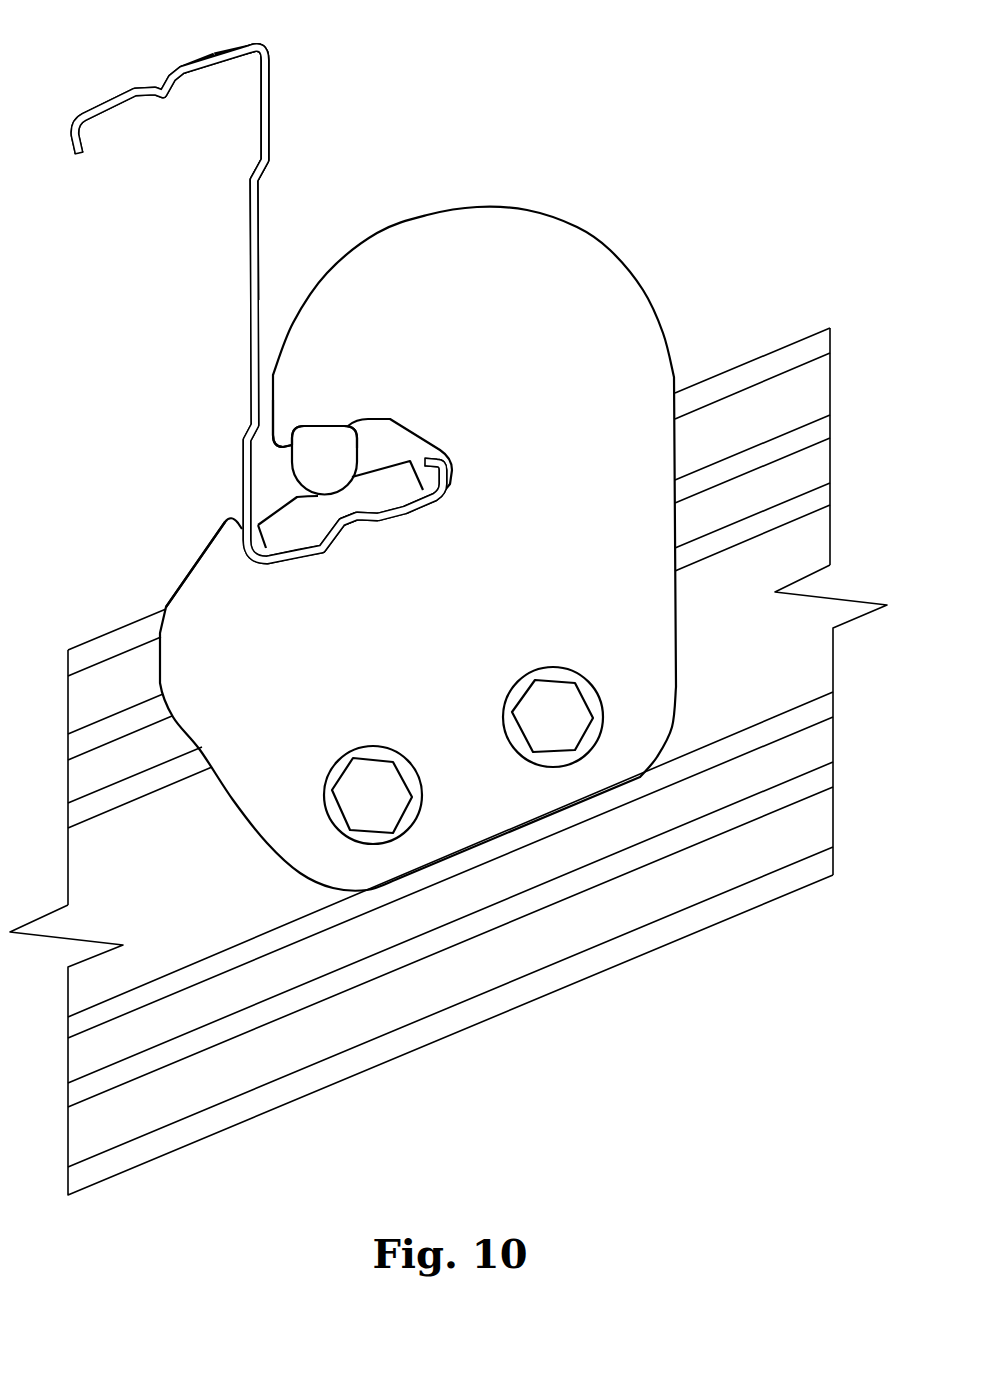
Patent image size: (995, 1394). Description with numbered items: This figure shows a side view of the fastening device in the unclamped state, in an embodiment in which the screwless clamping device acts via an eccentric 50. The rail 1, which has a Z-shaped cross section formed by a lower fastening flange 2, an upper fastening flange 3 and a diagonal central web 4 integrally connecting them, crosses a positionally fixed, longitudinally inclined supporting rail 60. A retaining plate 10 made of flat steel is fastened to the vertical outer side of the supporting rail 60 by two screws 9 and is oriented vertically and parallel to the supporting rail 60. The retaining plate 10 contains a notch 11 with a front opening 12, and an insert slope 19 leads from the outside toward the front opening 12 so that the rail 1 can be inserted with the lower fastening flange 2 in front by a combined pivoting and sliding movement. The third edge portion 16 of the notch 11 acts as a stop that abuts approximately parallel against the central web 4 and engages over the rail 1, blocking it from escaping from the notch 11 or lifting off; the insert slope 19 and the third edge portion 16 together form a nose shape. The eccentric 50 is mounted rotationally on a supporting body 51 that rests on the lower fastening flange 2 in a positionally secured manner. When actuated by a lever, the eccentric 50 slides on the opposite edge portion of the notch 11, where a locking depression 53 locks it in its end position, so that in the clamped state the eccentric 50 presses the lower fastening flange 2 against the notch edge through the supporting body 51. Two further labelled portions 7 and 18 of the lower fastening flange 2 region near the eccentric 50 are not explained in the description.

The rail 1 is at (317, 89).
The lower fastening flange 2 is at (295, 551).
The upper fastening flange 3 is at (108, 98).
The central web 4 is at (247, 287).
The bend of rod 7 is at (338, 537).
The screws 9 is at (408, 812).
The retaining plate 10 is at (604, 282).
The notch 11 is at (398, 461).
The front opening 12 is at (249, 487).
The third edge portion 16 is at (238, 537).
The offset section 18 is at (349, 527).
The insert slope 19 is at (193, 563).
The eccentric 50 is at (338, 478).
The supporting body 51 is at (395, 503).
The locking depression 53 is at (306, 425).
The supporting rail 60 is at (686, 975).